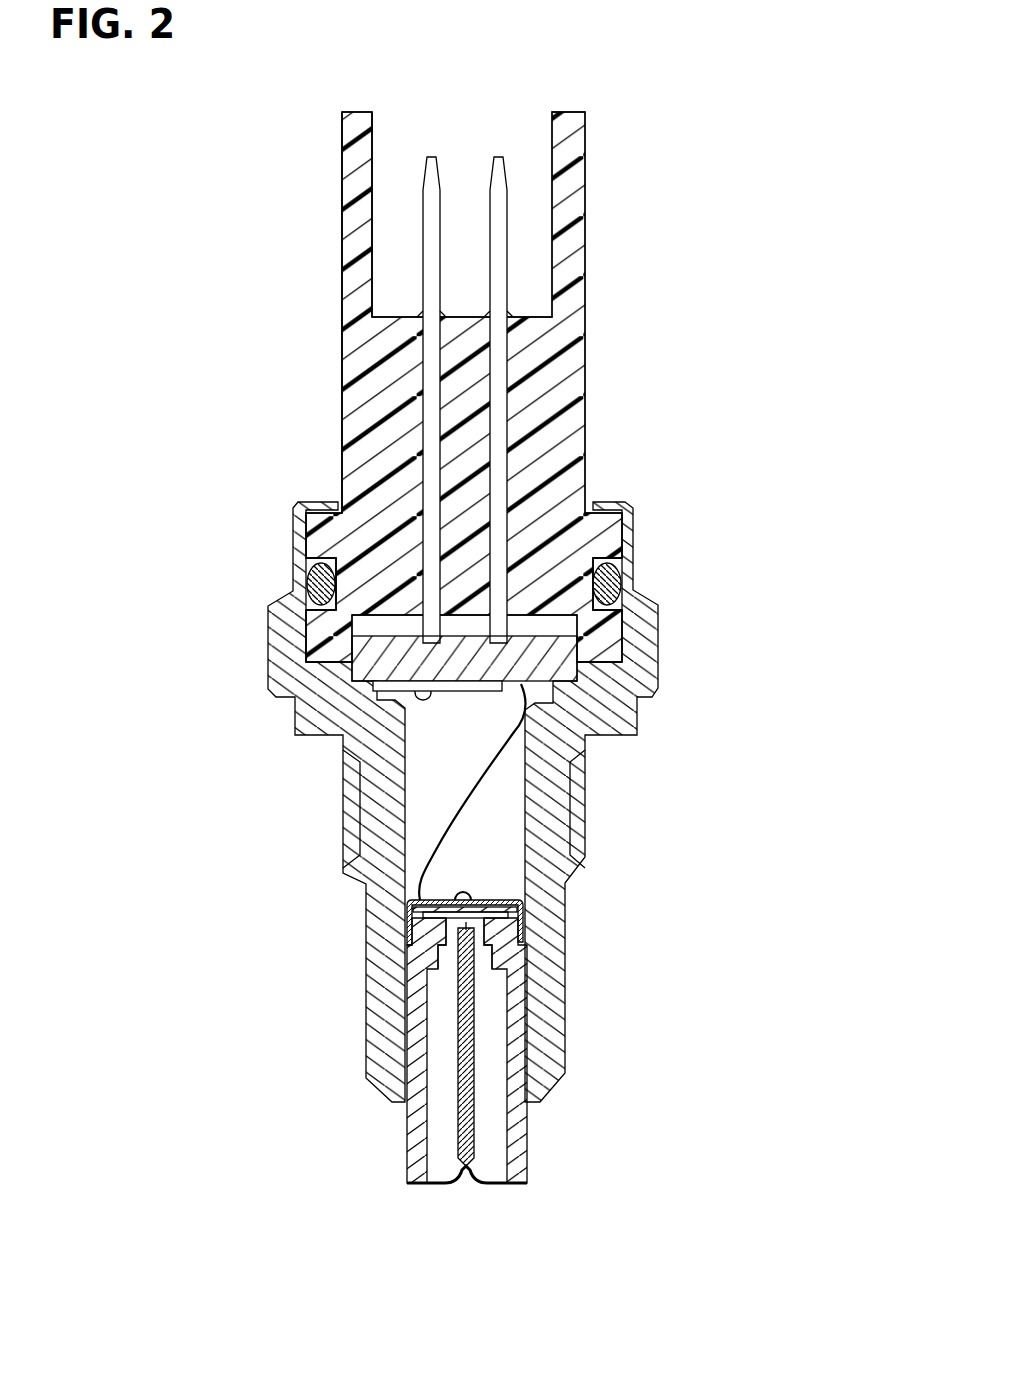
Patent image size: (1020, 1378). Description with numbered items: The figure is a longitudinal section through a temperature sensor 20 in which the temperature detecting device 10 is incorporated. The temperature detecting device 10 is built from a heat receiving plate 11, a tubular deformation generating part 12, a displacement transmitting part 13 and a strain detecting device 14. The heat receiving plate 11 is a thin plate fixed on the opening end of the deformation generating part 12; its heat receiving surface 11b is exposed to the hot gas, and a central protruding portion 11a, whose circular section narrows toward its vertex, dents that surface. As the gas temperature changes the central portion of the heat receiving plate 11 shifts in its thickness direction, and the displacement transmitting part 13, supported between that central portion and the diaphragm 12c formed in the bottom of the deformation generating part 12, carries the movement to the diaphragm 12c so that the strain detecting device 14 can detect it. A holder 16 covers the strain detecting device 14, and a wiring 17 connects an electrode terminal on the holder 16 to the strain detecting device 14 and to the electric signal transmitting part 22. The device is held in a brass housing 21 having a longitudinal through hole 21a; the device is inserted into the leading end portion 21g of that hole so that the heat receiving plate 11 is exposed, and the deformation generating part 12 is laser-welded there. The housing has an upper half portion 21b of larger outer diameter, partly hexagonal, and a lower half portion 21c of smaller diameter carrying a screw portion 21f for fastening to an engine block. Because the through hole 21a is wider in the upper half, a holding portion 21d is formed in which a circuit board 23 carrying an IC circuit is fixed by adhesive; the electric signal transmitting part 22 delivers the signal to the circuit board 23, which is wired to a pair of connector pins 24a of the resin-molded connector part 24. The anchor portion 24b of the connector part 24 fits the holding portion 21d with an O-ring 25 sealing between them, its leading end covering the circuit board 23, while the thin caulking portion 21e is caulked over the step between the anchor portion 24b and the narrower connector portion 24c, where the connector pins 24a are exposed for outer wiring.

The temperature sensor 20 is at (309, 120).
The connector part 24 is at (570, 366).
The connector pins 24a is at (427, 158).
The anchor portion 24b is at (306, 547).
The connector portion 24c is at (352, 400).
The housing 21 is at (268, 636).
The through hole 21a is at (515, 776).
The upper half portion 21b is at (660, 648).
The lower half portion 21c is at (345, 803).
The holding portion 21d is at (610, 547).
The caulking portion 21e is at (603, 503).
The screw portion 21f is at (580, 857).
The leading end portion 21g is at (525, 1098).
The O-ring 25 is at (622, 584).
The circuit board 23 is at (365, 668).
The electric signal transmitting part 22 is at (462, 832).
The temperature detecting device 10 is at (385, 1165).
The wiring 17 is at (470, 893).
The holder 16 is at (400, 912).
The strain detecting device 14 is at (402, 953).
The deformation generating part 12 is at (530, 1182).
The diaphragm 12c is at (490, 943).
The displacement transmitting part 13 is at (480, 1145).
The heat receiving plate 11 is at (415, 1187).
The protruding portion 11a is at (445, 1190).
The heat receiving surface 11b is at (480, 1188).